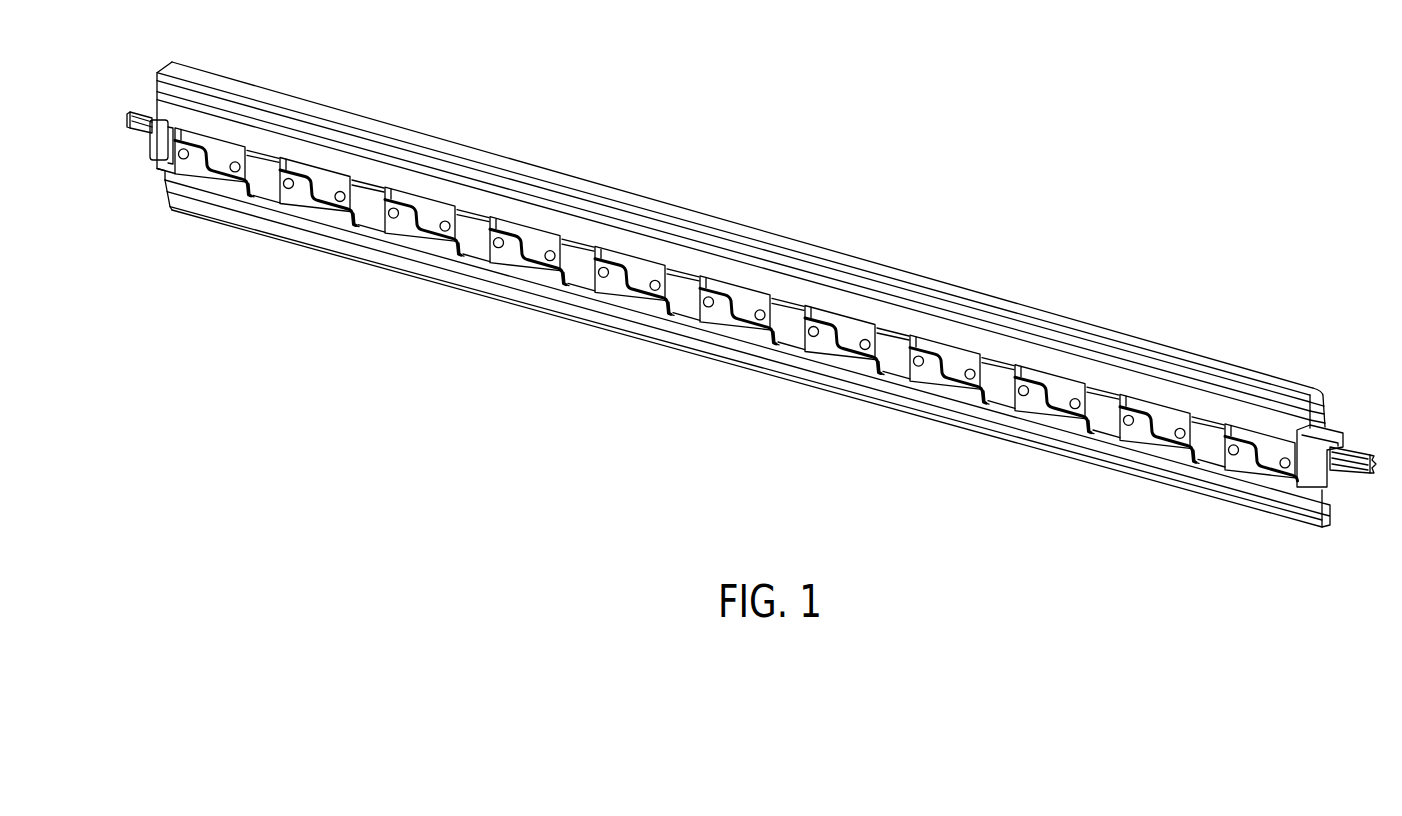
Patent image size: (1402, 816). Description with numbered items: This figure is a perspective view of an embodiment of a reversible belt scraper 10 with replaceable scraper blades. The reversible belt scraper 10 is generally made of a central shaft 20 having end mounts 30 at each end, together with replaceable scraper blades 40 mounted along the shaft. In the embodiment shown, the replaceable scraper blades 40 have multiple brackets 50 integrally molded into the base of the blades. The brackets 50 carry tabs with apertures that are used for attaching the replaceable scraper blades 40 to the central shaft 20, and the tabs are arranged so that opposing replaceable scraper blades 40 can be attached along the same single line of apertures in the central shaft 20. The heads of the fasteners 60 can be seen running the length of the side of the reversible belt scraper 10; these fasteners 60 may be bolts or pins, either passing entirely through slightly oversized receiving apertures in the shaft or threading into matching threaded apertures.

The reversible belt scraper 10 is at (750, 304).
The central shaft 20 is at (998, 383).
The end mounts 30 is at (150, 142).
The replaceable scraper blades 40 is at (1012, 310).
The brackets 50 is at (1243, 458).
The fasteners 60 is at (761, 320).